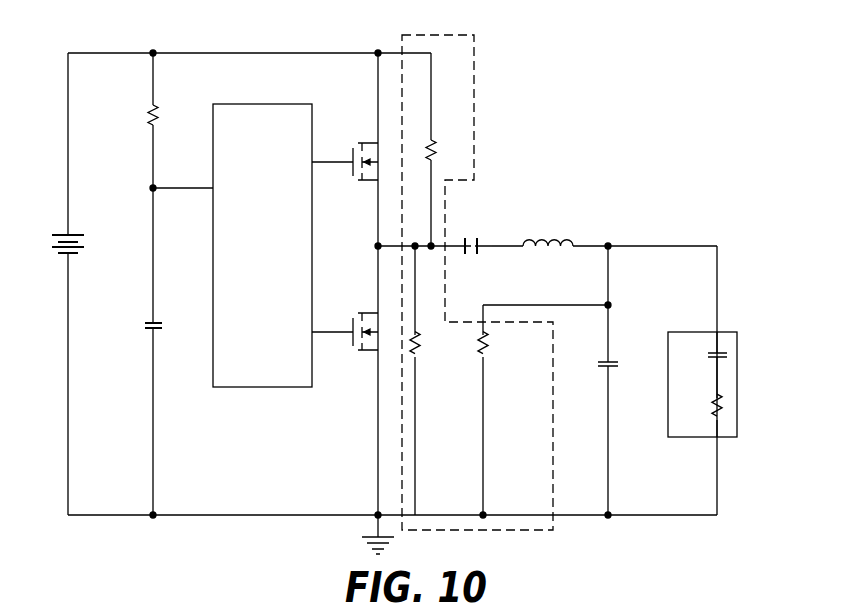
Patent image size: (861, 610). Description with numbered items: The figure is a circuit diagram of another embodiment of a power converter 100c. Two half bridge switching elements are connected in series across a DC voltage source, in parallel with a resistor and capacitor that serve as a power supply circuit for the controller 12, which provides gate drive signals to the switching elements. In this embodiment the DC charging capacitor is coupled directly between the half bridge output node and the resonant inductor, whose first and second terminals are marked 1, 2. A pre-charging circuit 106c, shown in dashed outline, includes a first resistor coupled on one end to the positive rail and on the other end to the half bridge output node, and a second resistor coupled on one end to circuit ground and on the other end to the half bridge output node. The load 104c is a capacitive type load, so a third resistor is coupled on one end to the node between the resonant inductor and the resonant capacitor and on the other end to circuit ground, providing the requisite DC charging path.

The power converter 100c is at (367, 284).
The pre-charging circuit 106c is at (474, 97).
The load 104c is at (737, 388).
The controller 12 is at (248, 373).
The first terminal of inductor L1 1 is at (507, 233).
The second terminal of inductor L1 2 is at (590, 233).